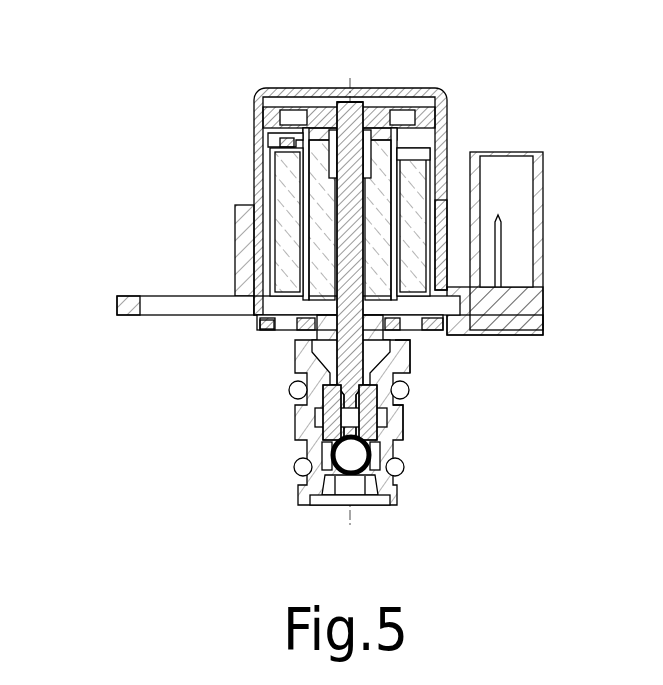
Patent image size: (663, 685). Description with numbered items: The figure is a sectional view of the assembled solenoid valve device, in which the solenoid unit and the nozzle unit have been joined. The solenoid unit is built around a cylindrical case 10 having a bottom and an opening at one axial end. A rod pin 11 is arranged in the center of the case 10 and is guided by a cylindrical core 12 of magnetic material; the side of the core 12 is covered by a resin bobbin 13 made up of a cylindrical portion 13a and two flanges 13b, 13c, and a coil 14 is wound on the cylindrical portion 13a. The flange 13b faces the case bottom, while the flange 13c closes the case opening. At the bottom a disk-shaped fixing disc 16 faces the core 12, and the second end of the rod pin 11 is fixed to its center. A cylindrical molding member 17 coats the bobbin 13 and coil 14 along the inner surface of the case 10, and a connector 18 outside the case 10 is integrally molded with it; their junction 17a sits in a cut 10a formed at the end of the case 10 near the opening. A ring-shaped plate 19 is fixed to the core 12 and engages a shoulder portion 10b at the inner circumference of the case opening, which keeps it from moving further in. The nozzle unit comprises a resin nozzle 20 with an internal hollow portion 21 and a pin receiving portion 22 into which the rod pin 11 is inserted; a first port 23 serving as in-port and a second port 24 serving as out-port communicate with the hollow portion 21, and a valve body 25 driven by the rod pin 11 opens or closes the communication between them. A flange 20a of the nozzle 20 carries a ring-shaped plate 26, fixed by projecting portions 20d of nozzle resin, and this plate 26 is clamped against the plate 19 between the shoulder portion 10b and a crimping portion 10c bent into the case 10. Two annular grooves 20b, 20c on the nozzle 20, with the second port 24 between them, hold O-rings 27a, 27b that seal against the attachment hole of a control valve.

The case 10 is at (367, 88).
The cut 10a is at (445, 292).
The shoulder portion 10b is at (265, 297).
The crimping portion 10c is at (268, 338).
The rod pin 11 is at (341, 100).
The cylindrical core 12 is at (382, 140).
The bobbin 13 is at (304, 197).
The cylindrical portion 13a is at (303, 176).
The flange 13b is at (288, 150).
The flange 13c is at (460, 313).
The coil 14 is at (413, 163).
The fixing disc 16 is at (327, 118).
The molding member 17 is at (430, 168).
The junction 17a is at (458, 290).
The connector 18 is at (512, 165).
The plate 19 is at (200, 303).
The nozzle 20 is at (300, 364).
The flange 20a is at (412, 340).
The annular groove 20b is at (405, 405).
The annular groove 20c is at (300, 482).
The projecting portion 20d is at (252, 295).
The hollow portion 21 is at (375, 410).
The pin receiving portion 22 is at (375, 360).
The first port 23 is at (358, 482).
The second port 24 is at (317, 412).
The valve body 25 is at (338, 455).
The plate 26 is at (262, 327).
The O-ring 27a is at (408, 390).
The O-ring 27b is at (300, 463).